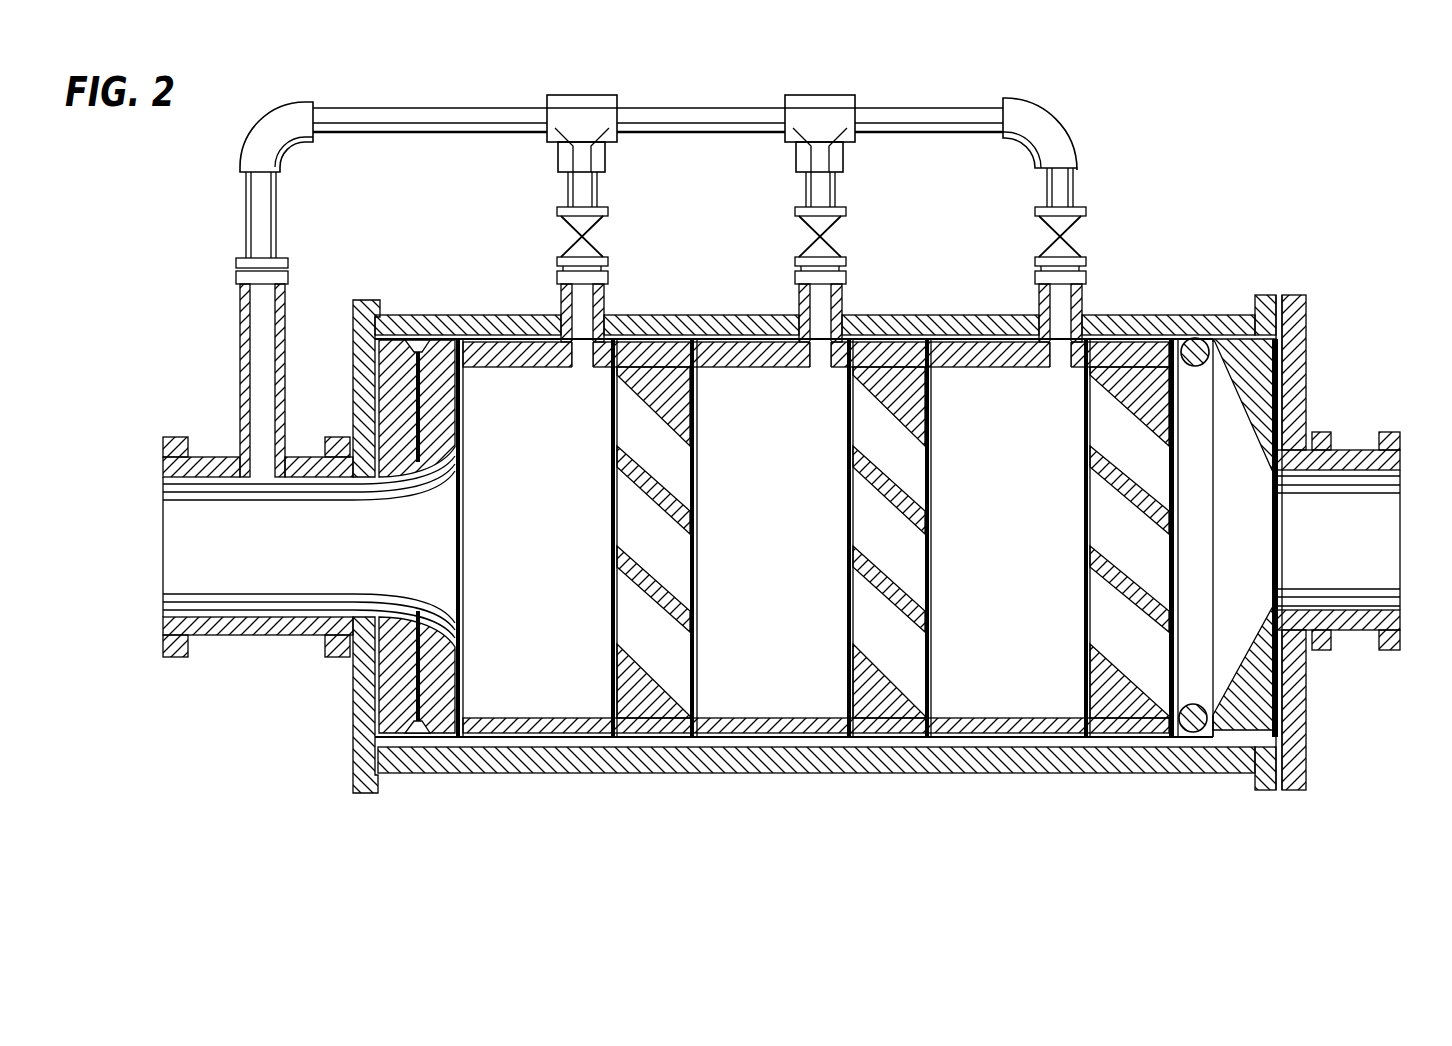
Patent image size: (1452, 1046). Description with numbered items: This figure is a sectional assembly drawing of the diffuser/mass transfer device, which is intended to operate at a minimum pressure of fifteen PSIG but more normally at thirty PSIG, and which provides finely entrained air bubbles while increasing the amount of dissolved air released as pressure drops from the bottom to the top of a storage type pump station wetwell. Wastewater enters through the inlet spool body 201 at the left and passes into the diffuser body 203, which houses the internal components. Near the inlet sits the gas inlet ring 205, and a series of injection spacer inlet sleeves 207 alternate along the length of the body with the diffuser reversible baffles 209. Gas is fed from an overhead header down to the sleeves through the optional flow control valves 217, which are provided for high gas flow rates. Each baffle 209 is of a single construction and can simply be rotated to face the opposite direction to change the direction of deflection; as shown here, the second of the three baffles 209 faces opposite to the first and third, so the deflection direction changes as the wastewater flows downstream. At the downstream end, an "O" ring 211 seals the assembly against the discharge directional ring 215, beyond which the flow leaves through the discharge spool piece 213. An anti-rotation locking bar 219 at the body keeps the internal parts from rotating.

The inlet spool body 201 is at (186, 662).
The diffuser body 203 is at (366, 802).
The gas inlet ring 205 is at (396, 723).
The injection spacer inlet sleeves 207 is at (595, 744).
The diffuser reversible baffles 209 is at (647, 744).
The "O" ring 211 is at (1204, 744).
The discharge spool piece 213 is at (1336, 640).
The discharge directional ring 215 is at (1239, 346).
The flow control valves 217 is at (610, 219).
The anti-rotation locking bar 219 is at (372, 762).